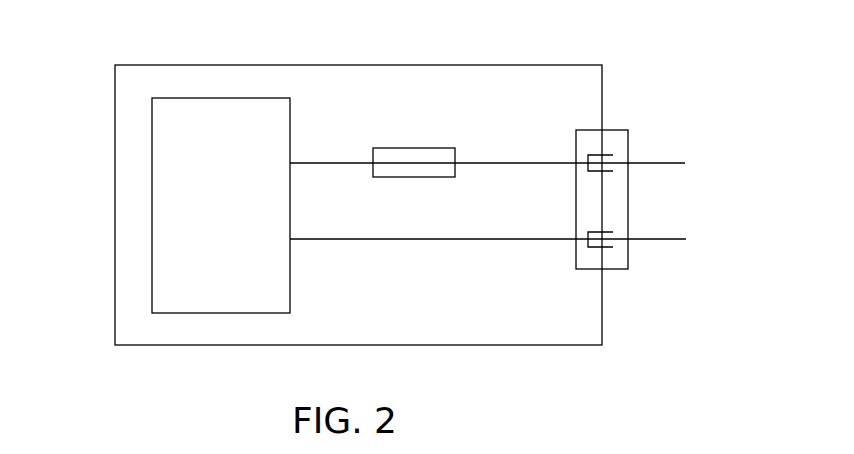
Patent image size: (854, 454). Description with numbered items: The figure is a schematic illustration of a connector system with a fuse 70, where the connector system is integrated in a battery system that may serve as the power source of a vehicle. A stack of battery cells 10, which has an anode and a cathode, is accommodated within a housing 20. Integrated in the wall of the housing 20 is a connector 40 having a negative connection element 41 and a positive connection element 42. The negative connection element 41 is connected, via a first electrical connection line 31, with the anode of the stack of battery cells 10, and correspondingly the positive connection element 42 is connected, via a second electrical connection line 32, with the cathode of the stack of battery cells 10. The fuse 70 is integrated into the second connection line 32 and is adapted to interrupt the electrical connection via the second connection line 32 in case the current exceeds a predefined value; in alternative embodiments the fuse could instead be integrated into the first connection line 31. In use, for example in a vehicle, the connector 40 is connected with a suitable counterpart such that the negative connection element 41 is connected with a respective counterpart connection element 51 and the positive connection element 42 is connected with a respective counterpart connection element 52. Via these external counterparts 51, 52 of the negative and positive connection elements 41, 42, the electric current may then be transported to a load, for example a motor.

The stack of battery cells 10 is at (152, 205).
The housing 20 is at (195, 65).
The first electrical connection line 31 is at (357, 239).
The second electrical connection line 32 is at (533, 163).
The connector 40 is at (576, 258).
The negative connection element 41 is at (600, 247).
The positive connection element 42 is at (600, 155).
The counterpart connection element 51 is at (672, 240).
The counterpart connection element 52 is at (665, 163).
The fuse 70 is at (414, 148).